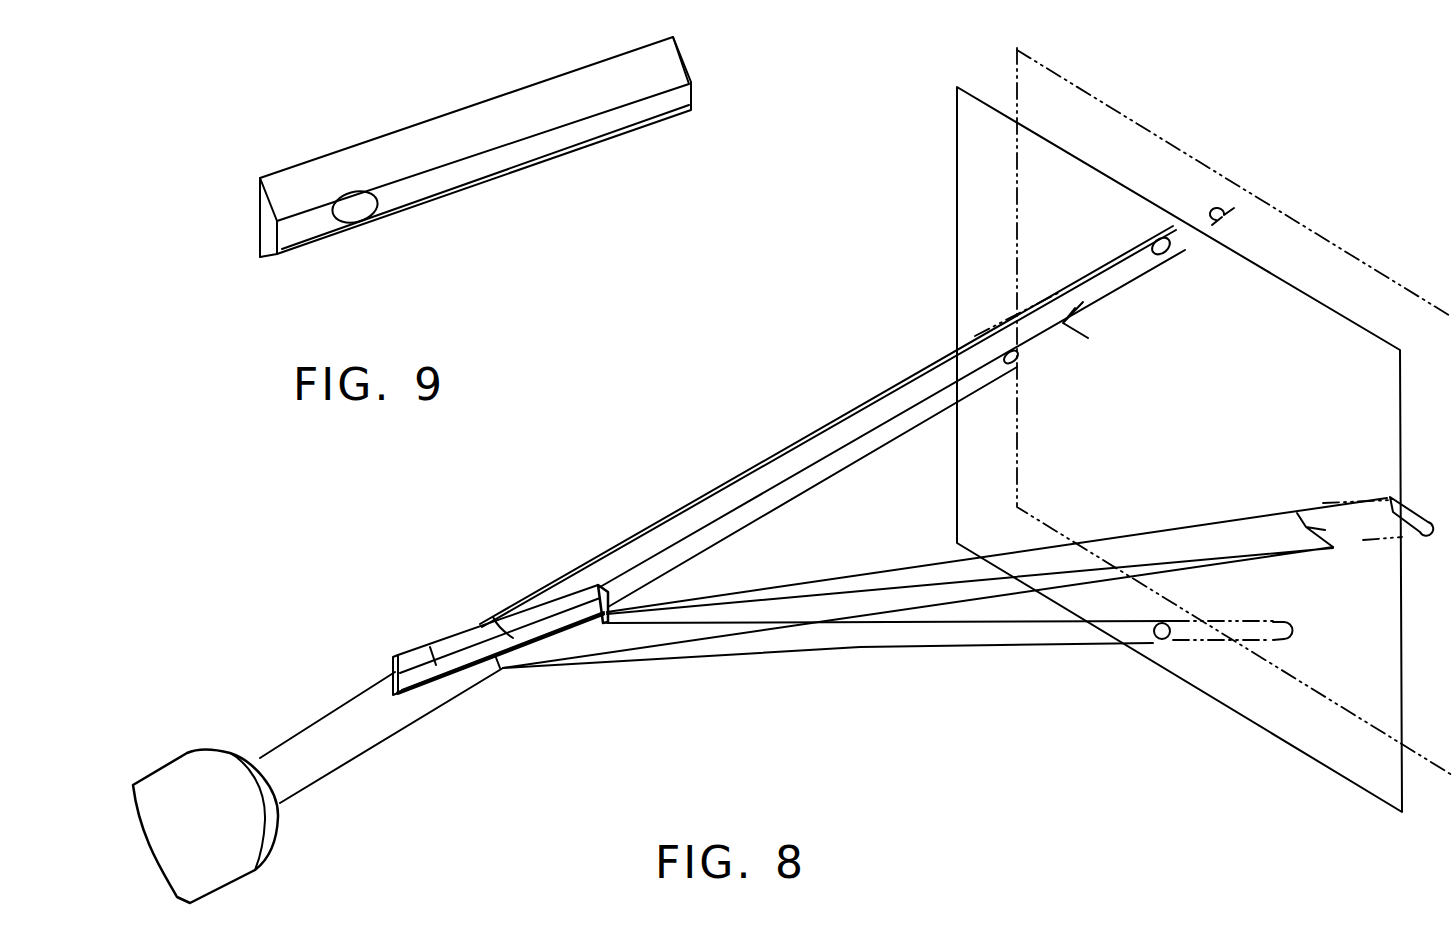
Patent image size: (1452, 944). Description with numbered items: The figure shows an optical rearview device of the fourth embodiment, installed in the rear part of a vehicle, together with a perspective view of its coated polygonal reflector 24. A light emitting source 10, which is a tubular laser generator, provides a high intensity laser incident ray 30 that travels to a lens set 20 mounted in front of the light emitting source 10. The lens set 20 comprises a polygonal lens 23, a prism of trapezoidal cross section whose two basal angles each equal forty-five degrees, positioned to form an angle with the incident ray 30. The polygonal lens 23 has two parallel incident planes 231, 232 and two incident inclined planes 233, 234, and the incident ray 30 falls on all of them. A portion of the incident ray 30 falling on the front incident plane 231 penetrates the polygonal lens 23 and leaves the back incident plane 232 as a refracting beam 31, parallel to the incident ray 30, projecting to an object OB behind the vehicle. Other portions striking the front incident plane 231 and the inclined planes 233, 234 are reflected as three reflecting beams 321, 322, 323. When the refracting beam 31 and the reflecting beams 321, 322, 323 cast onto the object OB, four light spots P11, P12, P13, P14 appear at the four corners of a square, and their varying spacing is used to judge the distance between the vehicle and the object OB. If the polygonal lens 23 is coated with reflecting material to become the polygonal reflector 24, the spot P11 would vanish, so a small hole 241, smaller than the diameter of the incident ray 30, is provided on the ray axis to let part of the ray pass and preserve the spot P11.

In FIG. 8, the light emitting source 10 is at (187, 760).
In FIG. 8, the lens set 20 is at (478, 600).
In FIG. 8, the polygonal lens 23 is at (437, 642).
In FIG. 8, the front incident plane 231 is at (427, 673).
In FIG. 8, the back incident plane 232 is at (387, 668).
In FIG. 8, the incident inclined plane 233 is at (547, 610).
In FIG. 8, the incident inclined plane 234 is at (406, 693).
In FIG. 8, the incident ray 30 is at (317, 730).
In FIG. 8, the refracting beam 31 is at (870, 447).
In FIG. 8, the reflecting beam 321 is at (1180, 530).
In FIG. 8, the reflecting beam 322 is at (905, 641).
In FIG. 8, the reflecting beam 323 is at (1103, 288).
In FIG. 8, the light spot P11 is at (1018, 345).
In FIG. 8, the light spot P12 is at (1165, 248).
In FIG. 8, the light spot P13 is at (1310, 513).
In FIG. 8, the light spot P14 is at (1158, 641).
In FIG. 8, the object OB is at (1308, 738).
In FIG. 9, the polygonal reflector 24 is at (500, 158).
In FIG. 9, the small hole 241 is at (355, 210).